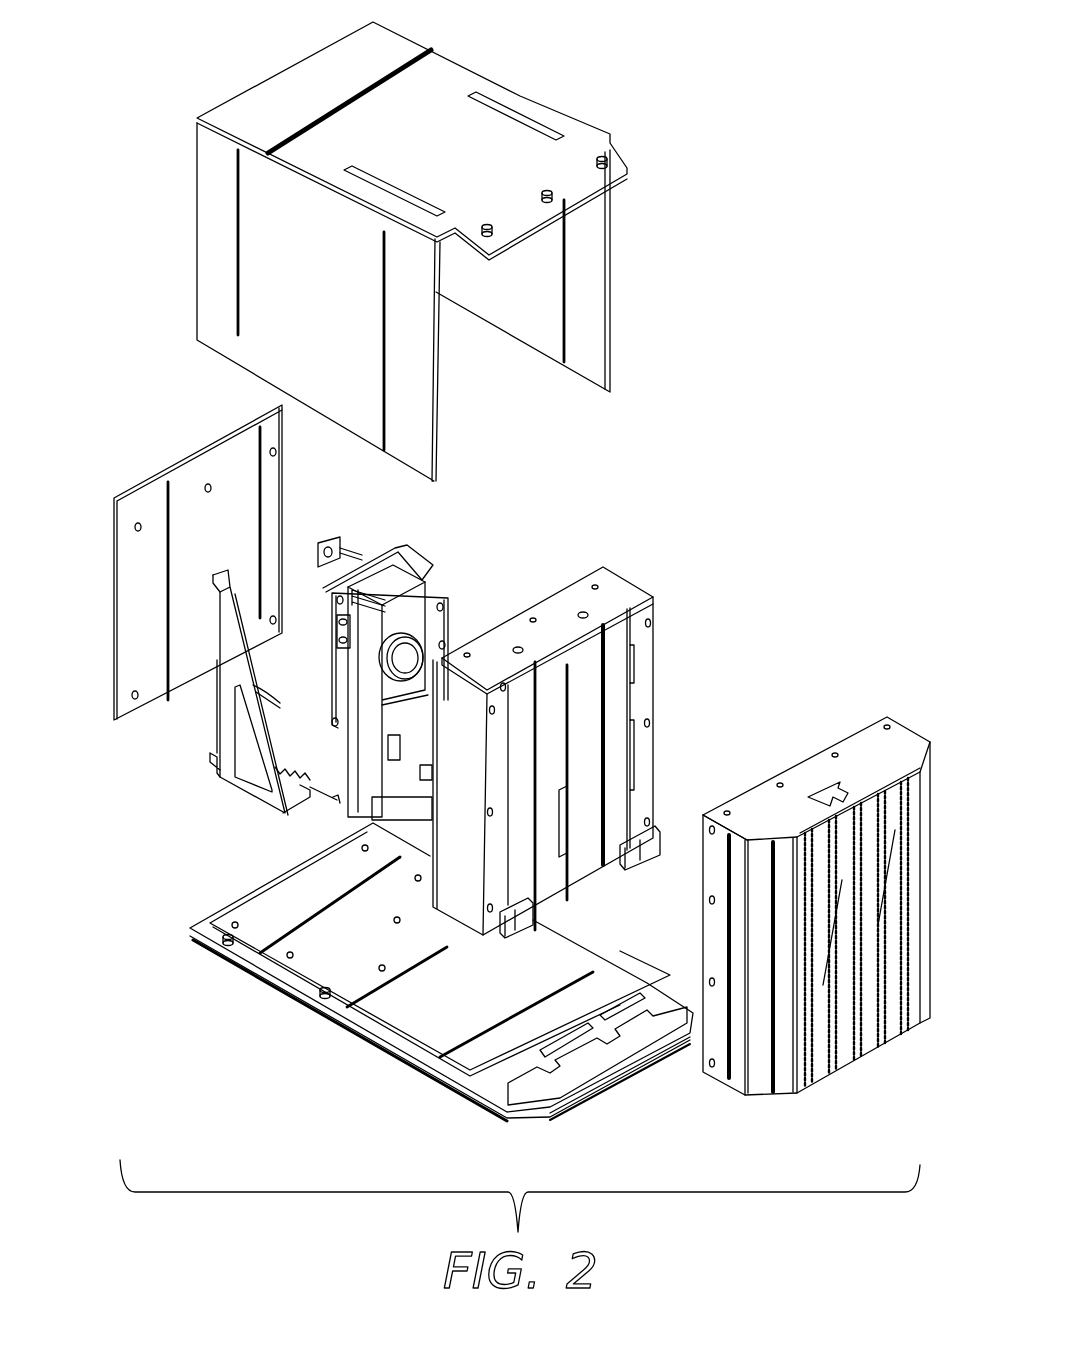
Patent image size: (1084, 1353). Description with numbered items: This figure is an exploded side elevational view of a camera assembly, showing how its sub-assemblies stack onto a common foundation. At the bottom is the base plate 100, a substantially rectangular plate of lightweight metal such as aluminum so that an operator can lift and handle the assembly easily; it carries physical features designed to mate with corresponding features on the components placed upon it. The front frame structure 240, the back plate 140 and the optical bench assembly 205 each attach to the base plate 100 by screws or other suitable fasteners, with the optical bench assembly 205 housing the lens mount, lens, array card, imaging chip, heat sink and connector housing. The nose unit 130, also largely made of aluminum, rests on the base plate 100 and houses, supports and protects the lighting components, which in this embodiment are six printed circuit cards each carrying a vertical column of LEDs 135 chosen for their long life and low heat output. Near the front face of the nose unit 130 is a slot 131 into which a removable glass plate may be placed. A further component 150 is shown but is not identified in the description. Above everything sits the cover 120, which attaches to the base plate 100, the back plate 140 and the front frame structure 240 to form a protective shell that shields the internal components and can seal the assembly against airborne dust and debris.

The base plate 100 is at (298, 997).
The cover 120 is at (610, 134).
The nose unit 130 is at (820, 916).
The slot 131 is at (915, 757).
The LEDs 135 is at (875, 1050).
The back plate 140 is at (220, 435).
The support bracket 150 is at (250, 797).
The optical bench assembly 205 is at (416, 544).
The front frame structure 240 is at (620, 575).